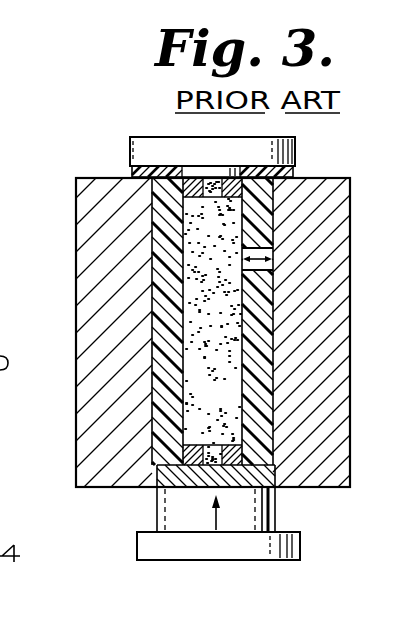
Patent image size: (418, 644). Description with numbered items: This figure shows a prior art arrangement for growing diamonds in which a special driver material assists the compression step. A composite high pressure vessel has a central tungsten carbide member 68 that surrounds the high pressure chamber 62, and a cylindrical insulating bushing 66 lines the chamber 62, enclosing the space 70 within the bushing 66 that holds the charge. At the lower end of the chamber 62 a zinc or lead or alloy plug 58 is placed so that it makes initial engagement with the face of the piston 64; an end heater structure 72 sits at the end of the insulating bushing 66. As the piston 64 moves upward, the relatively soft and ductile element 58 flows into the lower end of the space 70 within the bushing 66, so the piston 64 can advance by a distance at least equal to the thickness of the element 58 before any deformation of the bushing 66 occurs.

The zinc or lead or alloy plug 58 is at (180, 477).
The high pressure chamber 62 is at (273, 317).
The piston 64 is at (240, 512).
The cylindrical insulating bushing 66 is at (172, 253).
The central tungsten carbide member 68 is at (322, 448).
The space within the bushing 70 is at (236, 396).
The end heater structure 72 is at (237, 455).